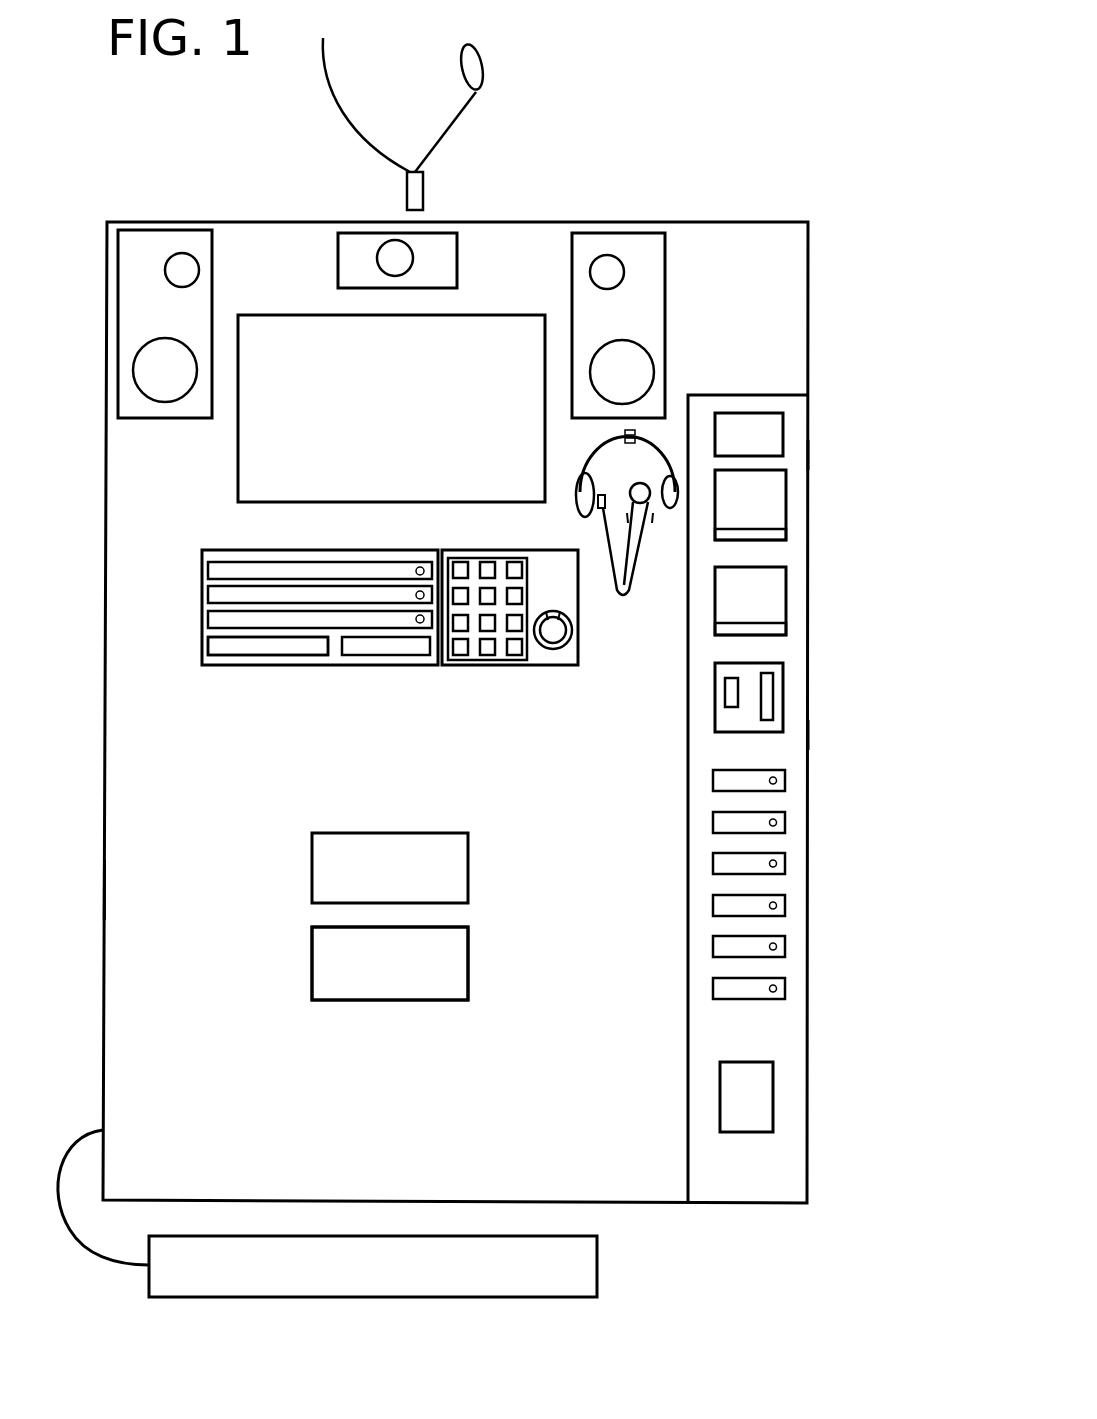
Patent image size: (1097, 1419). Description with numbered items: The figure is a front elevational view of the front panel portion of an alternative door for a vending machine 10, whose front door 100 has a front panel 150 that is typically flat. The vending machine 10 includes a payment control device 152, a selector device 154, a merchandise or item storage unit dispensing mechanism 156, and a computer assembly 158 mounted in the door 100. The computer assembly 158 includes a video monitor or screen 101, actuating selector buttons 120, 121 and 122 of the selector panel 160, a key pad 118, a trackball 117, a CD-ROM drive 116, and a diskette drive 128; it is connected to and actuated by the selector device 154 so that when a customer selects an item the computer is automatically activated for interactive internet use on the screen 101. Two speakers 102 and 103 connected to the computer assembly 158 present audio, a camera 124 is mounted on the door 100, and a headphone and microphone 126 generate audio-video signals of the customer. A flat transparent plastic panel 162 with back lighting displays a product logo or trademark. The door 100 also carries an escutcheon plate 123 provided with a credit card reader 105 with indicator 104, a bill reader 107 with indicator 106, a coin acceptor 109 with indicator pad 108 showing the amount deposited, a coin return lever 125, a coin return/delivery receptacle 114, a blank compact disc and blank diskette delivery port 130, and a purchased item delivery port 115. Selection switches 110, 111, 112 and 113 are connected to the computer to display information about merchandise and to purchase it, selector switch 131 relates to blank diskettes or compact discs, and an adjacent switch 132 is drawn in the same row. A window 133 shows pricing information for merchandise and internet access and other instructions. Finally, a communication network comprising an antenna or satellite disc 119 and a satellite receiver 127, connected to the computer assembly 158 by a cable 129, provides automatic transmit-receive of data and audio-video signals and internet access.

The vending machine 10 is at (798, 178).
The front door 100 is at (263, 226).
The video monitor or screen 101 is at (238, 450).
The speaker 102 is at (138, 236).
The speaker 103 is at (647, 240).
The indicator 104 is at (778, 490).
The credit card reader 105 is at (778, 533).
The indicator 106 is at (778, 580).
The bill reader 107 is at (778, 628).
The indicator pad 108 is at (778, 668).
The coin acceptor 109 is at (773, 700).
The selection switch 110 is at (780, 781).
The selection switch 111 is at (780, 823).
The selection switch 112 is at (780, 864).
The selection switch 113 is at (780, 905).
The coin return/delivery receptacle 114 is at (765, 1083).
The purchased item delivery port 115 is at (460, 978).
The CD-ROM drive 116 is at (265, 652).
The trackball 117 is at (553, 647).
The key pad 118 is at (482, 662).
The satellite disc 119 is at (467, 98).
The selector button 120 is at (208, 570).
The selector button 121 is at (208, 595).
The selector button 122 is at (208, 618).
The escutcheon plate 123 is at (790, 1172).
The camera 124 is at (440, 240).
The coin return lever 125 is at (725, 698).
The headphone and microphone 126 is at (580, 497).
The satellite receiver 127 is at (597, 1262).
The diskette drive 128 is at (377, 652).
The cable 129 is at (77, 1131).
The blank compact disc and blank diskette delivery port 130 is at (463, 860).
The selector switch 131 is at (780, 947).
The switch 132 is at (780, 988).
The window 133 is at (778, 425).
The front panel 150 is at (105, 890).
The payment control device 152 is at (808, 455).
The selector device 154 is at (808, 735).
The dispensing mechanism 156 is at (470, 943).
The computer assembly 158 is at (250, 550).
The selector panel 160 is at (198, 640).
The transparent plastic panel 162 is at (122, 980).